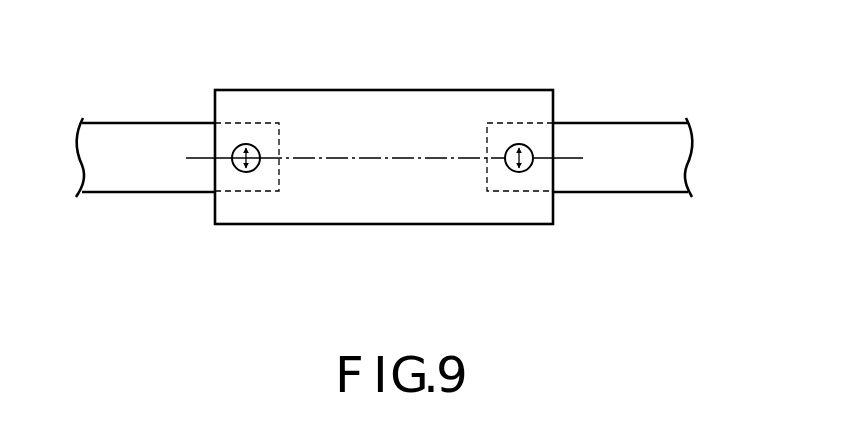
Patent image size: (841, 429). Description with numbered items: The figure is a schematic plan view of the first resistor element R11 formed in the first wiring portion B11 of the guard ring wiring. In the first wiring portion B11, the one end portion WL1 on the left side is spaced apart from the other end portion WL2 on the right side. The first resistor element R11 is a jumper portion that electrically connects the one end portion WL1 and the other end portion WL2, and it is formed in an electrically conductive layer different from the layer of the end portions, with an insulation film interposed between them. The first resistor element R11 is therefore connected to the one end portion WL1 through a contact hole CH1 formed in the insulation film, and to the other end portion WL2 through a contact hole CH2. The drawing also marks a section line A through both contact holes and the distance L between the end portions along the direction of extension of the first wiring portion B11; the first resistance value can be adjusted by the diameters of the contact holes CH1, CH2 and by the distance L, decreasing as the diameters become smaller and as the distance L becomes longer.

The first resistor element R11 is at (383, 224).
The first wiring portion B11 is at (569, 104).
The one end portion WL1 is at (148, 185).
The other end portion WL2 is at (623, 182).
The contact hole CH1 is at (257, 174).
The contact hole CH2 is at (532, 175).
The distance between the one end portion and the other end portion L is at (486, 129).
The section line A- A is at (384, 159).